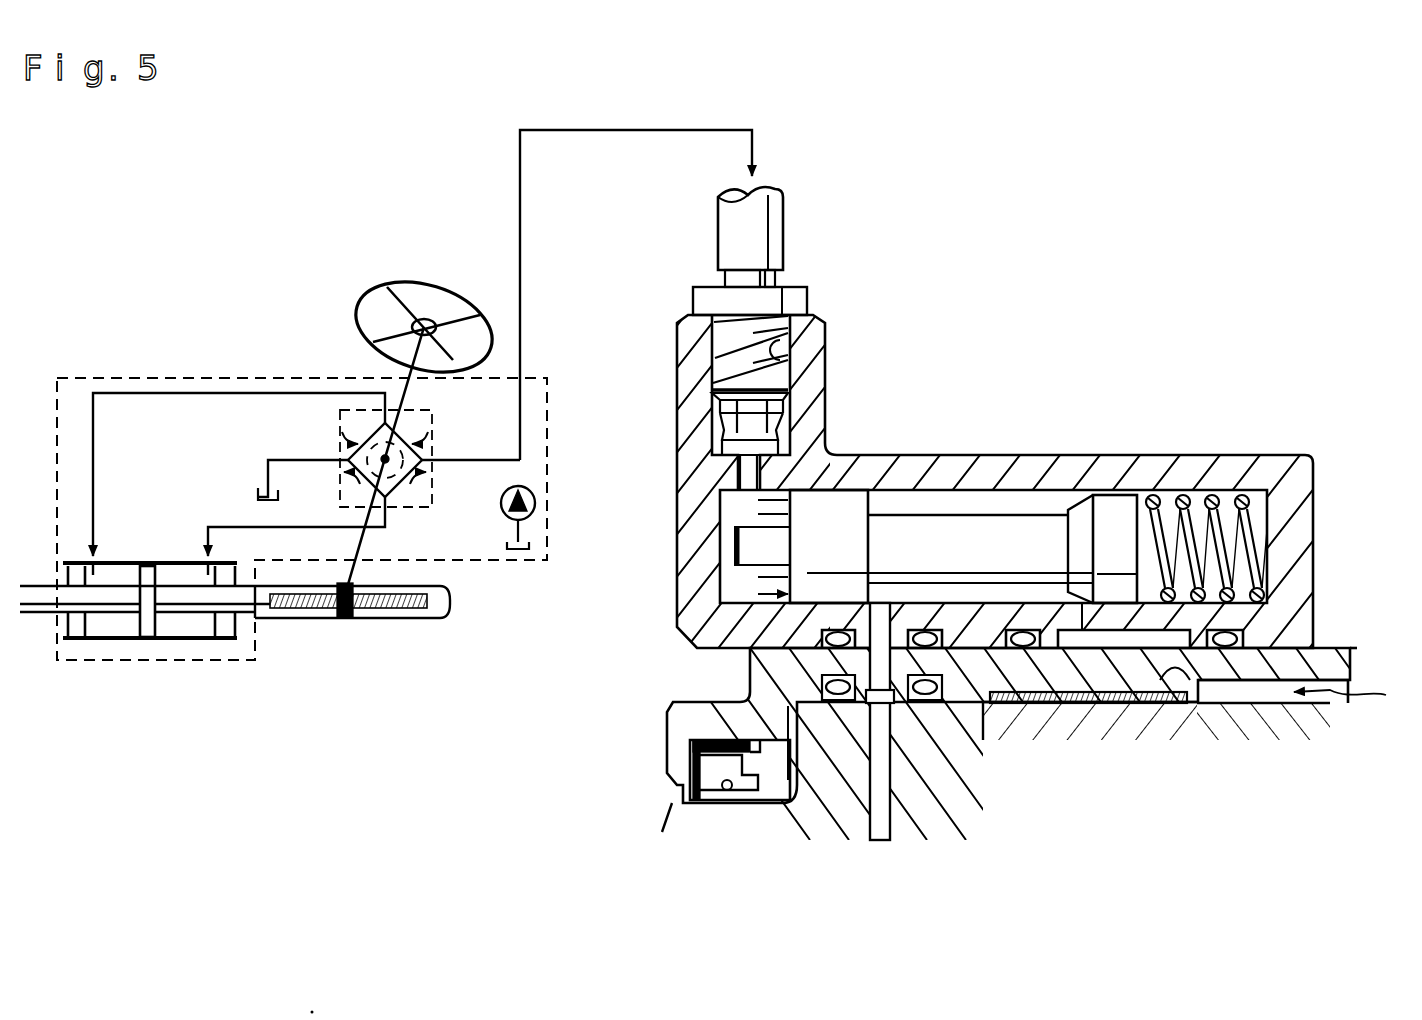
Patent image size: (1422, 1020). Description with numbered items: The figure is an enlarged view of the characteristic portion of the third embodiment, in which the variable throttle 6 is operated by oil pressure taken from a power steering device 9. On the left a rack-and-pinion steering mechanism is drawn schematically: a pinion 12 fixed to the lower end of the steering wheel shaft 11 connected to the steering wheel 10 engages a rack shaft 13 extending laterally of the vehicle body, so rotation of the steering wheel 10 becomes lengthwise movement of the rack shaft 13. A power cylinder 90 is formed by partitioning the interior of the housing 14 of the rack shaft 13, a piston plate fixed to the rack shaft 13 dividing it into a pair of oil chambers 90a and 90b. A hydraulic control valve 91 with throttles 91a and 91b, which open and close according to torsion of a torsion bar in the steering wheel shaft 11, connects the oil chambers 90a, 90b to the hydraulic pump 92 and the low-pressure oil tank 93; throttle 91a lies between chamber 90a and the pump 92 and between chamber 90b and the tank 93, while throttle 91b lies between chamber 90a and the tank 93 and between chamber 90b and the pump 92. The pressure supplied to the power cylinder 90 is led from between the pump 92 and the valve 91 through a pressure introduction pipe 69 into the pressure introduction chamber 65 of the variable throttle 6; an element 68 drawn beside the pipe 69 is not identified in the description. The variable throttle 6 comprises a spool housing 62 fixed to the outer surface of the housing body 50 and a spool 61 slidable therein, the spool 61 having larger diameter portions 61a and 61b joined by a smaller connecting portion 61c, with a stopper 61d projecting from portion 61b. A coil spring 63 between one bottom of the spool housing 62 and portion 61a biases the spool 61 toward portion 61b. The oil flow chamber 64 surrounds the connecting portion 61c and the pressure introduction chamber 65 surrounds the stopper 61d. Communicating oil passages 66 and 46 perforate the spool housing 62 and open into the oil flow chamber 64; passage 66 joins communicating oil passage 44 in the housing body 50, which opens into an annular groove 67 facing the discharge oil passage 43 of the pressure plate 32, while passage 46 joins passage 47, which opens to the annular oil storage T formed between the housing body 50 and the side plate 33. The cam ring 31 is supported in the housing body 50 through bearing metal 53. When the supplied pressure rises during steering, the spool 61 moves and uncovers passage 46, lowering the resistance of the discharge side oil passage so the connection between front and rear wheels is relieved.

The variable throttle 6 is at (919, 480).
The power steering device 9 is at (200, 378).
The steering wheel 10 is at (432, 283).
The steering wheel shaft 11 is at (408, 375).
The pinion 12 is at (348, 620).
The rack shaft 13 is at (398, 620).
The housing 14 is at (150, 585).
The cam ring 31 is at (1125, 722).
The pressure plate 32 is at (896, 777).
The side plate 33 is at (1275, 722).
The discharge oil passage 43 is at (872, 830).
The communicating oil passage 44 is at (850, 660).
The communicating oil passage 46 is at (1090, 655).
The communicating oil passage 47 is at (1172, 705).
The housing body 50 is at (1332, 648).
The bearing metal 53 is at (1020, 715).
The spool 61 is at (877, 471).
The larger diameter portion 61a is at (1112, 500).
The larger diameter portion 61b is at (845, 497).
The connecting portion 61c is at (975, 500).
The stopper 61d is at (738, 540).
The spool housing 62 is at (1200, 455).
The coil spring 63 is at (1240, 542).
The oil flow chamber 64 is at (1053, 493).
The pressure introduction chamber 65 is at (722, 583).
The communicating oil passage 66 is at (903, 500).
The annular groove 67 is at (900, 720).
The solenoid spring 68 is at (752, 338).
The pressure introduction pipe 69 is at (785, 229).
The power cylinder 90 is at (163, 562).
The oil chamber 90a is at (118, 562).
The oil chamber 90b is at (193, 562).
The hydraulic control valve 91 is at (413, 510).
The throttle 91a is at (430, 437).
The throttle 91b is at (345, 437).
The hydraulic pump 92 is at (533, 490).
The oil tank 93 is at (250, 490).
The oil storage T is at (1351, 691).